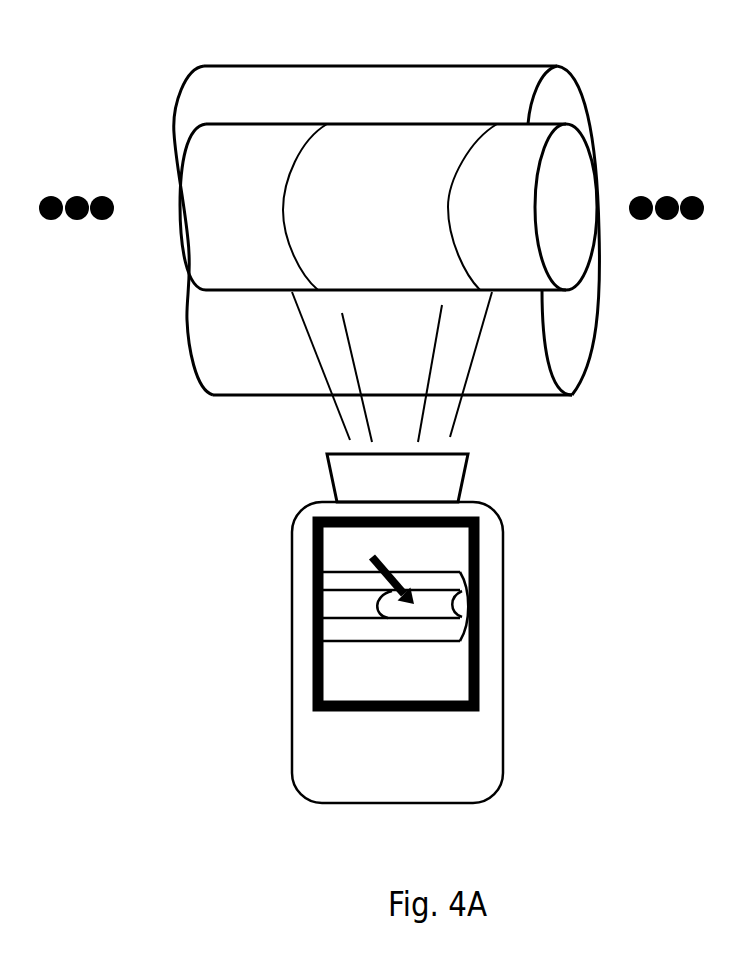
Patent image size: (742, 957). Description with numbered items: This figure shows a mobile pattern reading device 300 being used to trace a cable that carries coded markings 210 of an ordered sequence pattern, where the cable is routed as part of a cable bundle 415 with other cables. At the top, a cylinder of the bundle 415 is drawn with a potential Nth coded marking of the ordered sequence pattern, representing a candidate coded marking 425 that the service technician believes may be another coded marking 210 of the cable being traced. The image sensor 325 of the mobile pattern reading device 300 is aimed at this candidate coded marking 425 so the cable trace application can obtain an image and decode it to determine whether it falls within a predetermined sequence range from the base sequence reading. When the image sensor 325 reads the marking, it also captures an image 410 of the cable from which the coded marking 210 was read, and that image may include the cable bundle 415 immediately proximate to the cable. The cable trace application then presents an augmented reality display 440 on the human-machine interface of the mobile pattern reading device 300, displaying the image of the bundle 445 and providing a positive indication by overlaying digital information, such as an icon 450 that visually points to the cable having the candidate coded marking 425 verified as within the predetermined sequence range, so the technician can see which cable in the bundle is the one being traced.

The cable bundle 415 is at (479, 38).
The candidate coded marking 425 is at (361, 112).
The image sensor 325 is at (500, 469).
The mobile pattern reading device 300 is at (503, 781).
The coded marking 210 is at (480, 539).
The augmented reality display 440 is at (340, 540).
The image of the cable 410 is at (340, 605).
The image of the bundle 445 is at (338, 652).
The icon 450 is at (372, 557).